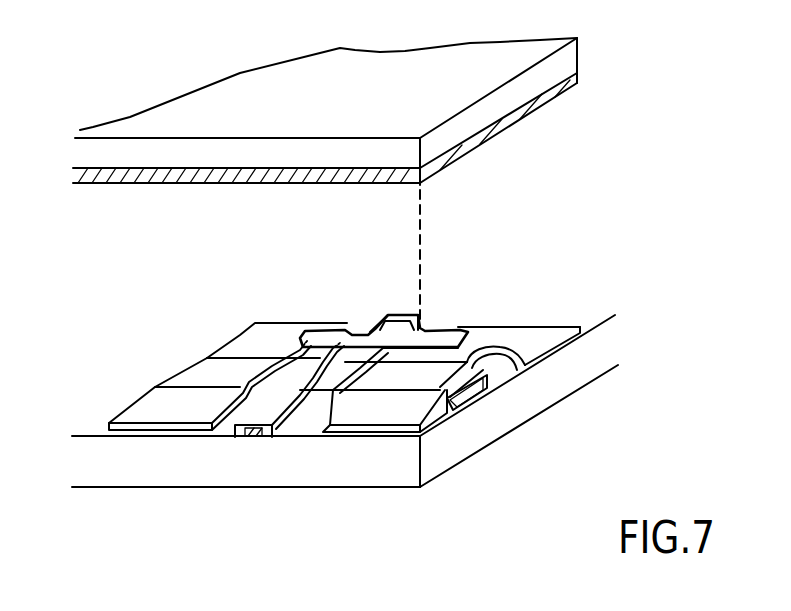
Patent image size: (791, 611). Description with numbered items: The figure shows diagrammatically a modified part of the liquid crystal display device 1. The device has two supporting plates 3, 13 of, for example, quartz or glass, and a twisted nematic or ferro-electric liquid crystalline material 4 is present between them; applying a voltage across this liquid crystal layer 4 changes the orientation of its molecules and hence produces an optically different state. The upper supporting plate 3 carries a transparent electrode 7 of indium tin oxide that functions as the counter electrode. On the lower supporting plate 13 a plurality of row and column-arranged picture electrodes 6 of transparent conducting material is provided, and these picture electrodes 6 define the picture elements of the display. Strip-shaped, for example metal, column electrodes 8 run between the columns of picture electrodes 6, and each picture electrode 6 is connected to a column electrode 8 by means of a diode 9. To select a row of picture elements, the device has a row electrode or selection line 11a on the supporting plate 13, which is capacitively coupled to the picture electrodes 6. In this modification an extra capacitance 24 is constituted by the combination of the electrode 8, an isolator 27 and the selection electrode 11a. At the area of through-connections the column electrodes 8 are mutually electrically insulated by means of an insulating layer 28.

The liquid crystal display device 1 is at (354, 407).
The supporting plate 3 is at (343, 111).
The liquid crystalline material 4 is at (505, 208).
The picture electrodes 6 is at (273, 340).
The transparent electrode 7 is at (566, 86).
The column electrodes 8 is at (250, 440).
The diode 9 is at (358, 333).
The row electrode 11a is at (465, 407).
The supporting plate 13 is at (352, 462).
The extra capacitance 24 is at (530, 360).
The isolator 27 is at (502, 385).
The insulating layer 28 is at (296, 437).